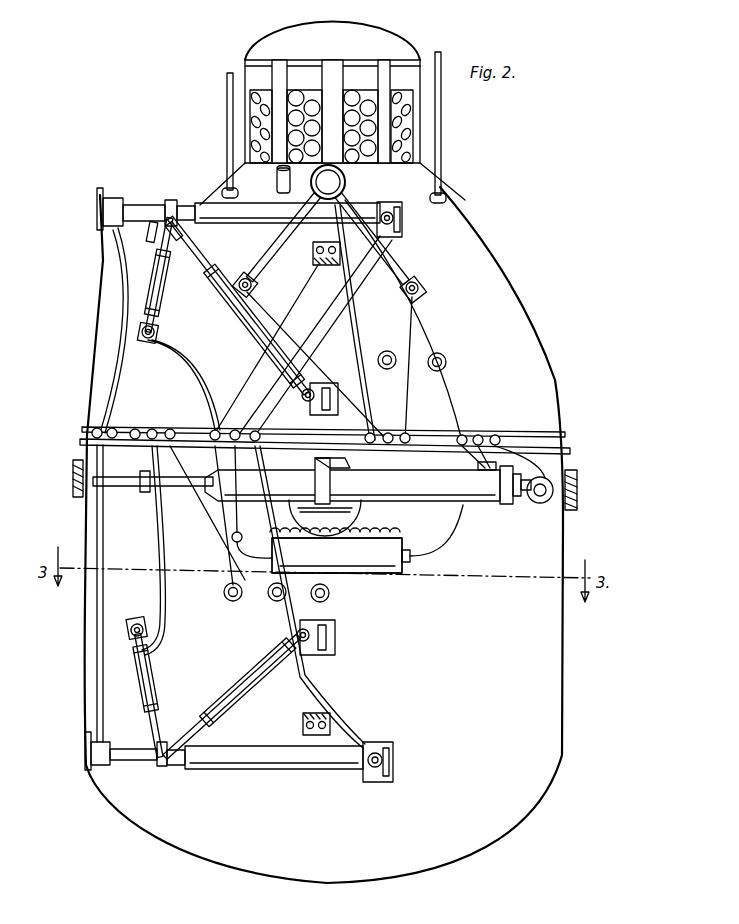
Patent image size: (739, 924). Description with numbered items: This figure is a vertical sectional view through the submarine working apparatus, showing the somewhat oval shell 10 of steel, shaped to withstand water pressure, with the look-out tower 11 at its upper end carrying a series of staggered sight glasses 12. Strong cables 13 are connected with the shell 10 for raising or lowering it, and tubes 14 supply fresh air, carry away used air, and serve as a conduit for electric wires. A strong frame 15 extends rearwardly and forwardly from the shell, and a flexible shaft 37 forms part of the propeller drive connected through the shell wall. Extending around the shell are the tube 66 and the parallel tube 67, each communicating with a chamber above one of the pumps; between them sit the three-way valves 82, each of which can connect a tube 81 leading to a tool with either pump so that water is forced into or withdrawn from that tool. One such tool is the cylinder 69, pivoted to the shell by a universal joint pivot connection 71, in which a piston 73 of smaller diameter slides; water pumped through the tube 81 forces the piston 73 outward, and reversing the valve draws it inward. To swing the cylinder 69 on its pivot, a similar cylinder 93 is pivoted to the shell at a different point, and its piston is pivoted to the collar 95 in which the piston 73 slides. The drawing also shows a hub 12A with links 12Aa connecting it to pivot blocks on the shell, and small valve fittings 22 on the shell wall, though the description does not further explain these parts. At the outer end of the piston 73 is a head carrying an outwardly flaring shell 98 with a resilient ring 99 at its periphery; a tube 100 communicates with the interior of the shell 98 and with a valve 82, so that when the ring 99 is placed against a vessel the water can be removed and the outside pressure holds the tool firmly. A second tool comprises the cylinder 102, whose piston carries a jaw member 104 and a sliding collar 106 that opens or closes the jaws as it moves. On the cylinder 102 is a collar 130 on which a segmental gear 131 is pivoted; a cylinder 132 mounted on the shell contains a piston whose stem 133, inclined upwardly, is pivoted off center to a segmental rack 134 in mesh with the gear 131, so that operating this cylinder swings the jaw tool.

The shell 10 is at (324, 523).
The look-out tower 11 is at (332, 92).
The sight glasses 12 is at (350, 100).
The pivot hub 12A is at (328, 182).
The links 12Aa is at (262, 266).
The cables 13 is at (229, 100).
The tubes 14 is at (276, 181).
The frame 15 is at (73, 472).
The valves 22 is at (437, 353).
The flexible shaft 37 is at (330, 594).
The tube 66 is at (530, 432).
The tube 67 is at (538, 453).
The cylinder 69 is at (268, 756).
The universal joint pivot connections 71 is at (403, 219).
The piston 73 is at (141, 207).
The tube 81 is at (118, 372).
The three-way valve 82 is at (152, 428).
The cylinder 93 is at (160, 291).
The collar 95 is at (172, 202).
The outwardly flaring shell 98 is at (100, 766).
The resilient ring 99 is at (150, 238).
The tube 100 is at (118, 290).
The cylinder 102 is at (379, 483).
The jaw member 104 is at (115, 490).
The collar 106 is at (143, 492).
The collar 130 is at (318, 480).
The segmental gear 131 is at (288, 508).
The cylinder 132 is at (341, 555).
The stem 133 is at (337, 555).
The segmental rack 134 is at (272, 540).